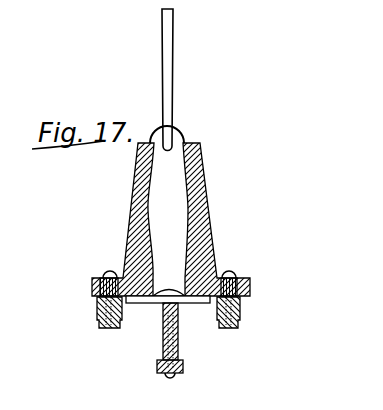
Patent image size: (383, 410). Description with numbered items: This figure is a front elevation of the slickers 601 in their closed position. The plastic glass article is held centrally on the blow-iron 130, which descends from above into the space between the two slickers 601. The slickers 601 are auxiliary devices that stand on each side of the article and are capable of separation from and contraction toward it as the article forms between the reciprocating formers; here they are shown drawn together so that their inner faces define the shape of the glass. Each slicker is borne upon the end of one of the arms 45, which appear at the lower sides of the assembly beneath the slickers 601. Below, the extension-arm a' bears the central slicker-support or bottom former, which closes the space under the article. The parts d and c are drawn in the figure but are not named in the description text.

The blow-iron 130 is at (187, 80).
The slickers 601 is at (171, 211).
The arms 45 is at (249, 315).
The plate d is at (193, 303).
The central bolt c is at (177, 335).
The extension-arm a' is at (180, 368).